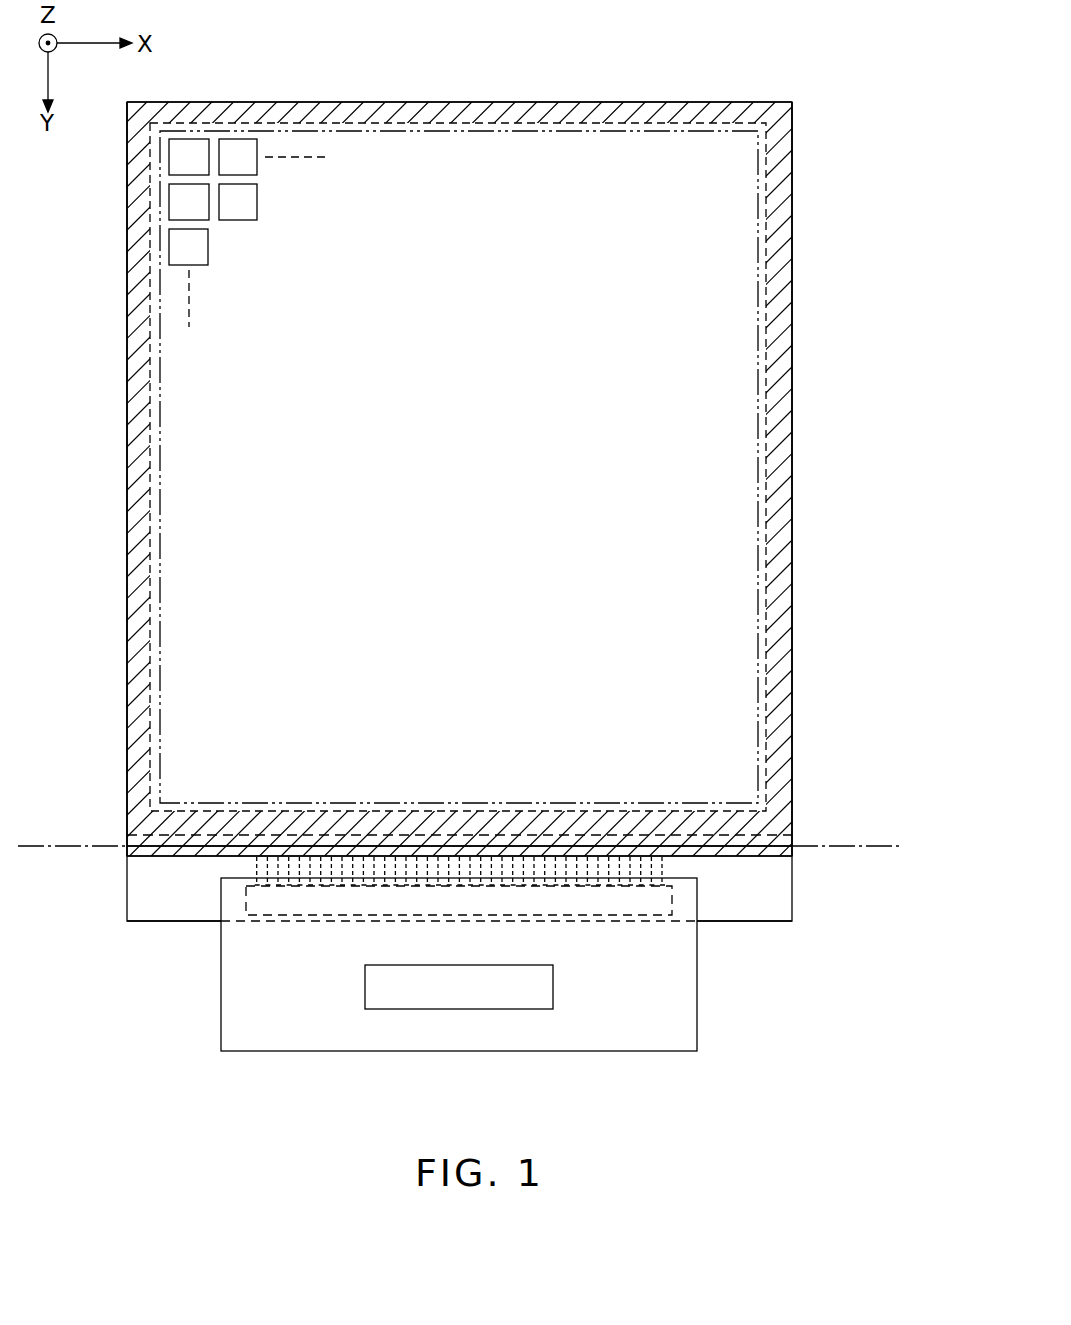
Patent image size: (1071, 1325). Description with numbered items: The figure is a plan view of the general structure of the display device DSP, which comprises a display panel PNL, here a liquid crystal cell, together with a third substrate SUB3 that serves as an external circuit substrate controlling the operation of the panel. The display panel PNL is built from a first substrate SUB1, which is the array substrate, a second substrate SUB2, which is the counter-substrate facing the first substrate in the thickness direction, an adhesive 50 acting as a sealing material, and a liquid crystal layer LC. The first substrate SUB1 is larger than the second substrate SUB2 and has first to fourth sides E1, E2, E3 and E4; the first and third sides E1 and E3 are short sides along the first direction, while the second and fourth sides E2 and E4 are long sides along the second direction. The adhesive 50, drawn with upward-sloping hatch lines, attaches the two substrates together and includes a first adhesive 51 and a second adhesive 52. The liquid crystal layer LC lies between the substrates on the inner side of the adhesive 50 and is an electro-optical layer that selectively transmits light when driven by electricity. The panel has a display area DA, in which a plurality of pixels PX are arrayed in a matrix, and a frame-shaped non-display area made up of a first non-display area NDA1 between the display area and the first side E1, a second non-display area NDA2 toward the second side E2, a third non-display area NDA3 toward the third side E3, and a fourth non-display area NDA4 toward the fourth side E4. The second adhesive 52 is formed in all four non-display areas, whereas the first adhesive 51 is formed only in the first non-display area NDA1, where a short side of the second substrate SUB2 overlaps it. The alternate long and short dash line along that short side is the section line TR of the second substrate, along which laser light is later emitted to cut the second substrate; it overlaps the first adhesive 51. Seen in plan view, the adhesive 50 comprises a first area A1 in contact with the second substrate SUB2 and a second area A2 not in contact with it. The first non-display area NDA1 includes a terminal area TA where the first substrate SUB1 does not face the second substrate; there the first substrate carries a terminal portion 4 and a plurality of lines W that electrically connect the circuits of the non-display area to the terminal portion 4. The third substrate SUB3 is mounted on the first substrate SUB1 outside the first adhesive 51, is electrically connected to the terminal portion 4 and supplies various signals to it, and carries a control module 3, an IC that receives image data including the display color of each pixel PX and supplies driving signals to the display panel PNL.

The display device DSP is at (739, 98).
The display panel PNL is at (615, 98).
The first substrate SUB1 is at (187, 923).
The second substrate SUB2 is at (150, 850).
The third substrate SUB3 is at (300, 1051).
The first side E1 is at (792, 921).
The second side E2 is at (127, 393).
The third side E3 is at (765, 101).
The fourth side E4 is at (792, 464).
The adhesive 50 is at (845, 702).
The first adhesive 51 is at (792, 838).
The second adhesive 52 is at (782, 717).
The first area A1 is at (127, 841).
The second area A2 is at (127, 850).
The section line TR is at (40, 843).
The display area DA is at (409, 167).
The liquid crystal layer LC is at (712, 615).
The first non-display area NDA1 is at (763, 882).
The second non-display area NDA2 is at (160, 546).
The third non-display area NDA3 is at (512, 130).
The fourth non-display area NDA4 is at (758, 370).
The pixel PX is at (190, 155).
The terminal area TA is at (765, 913).
The control module 3 is at (493, 1010).
The terminal portion 4 is at (672, 907).
The lines W is at (615, 877).